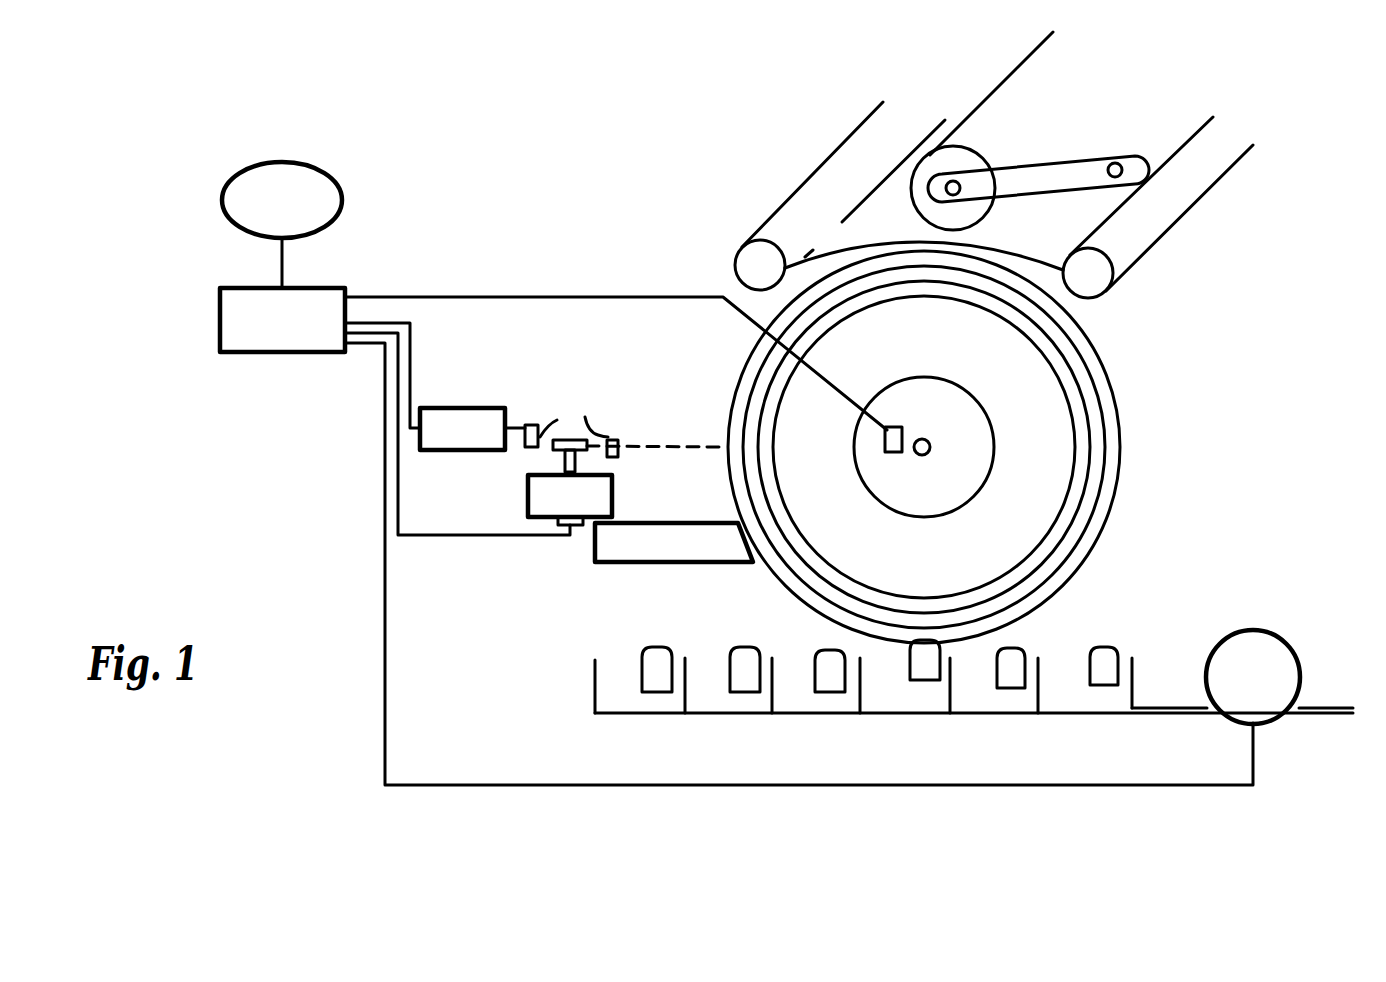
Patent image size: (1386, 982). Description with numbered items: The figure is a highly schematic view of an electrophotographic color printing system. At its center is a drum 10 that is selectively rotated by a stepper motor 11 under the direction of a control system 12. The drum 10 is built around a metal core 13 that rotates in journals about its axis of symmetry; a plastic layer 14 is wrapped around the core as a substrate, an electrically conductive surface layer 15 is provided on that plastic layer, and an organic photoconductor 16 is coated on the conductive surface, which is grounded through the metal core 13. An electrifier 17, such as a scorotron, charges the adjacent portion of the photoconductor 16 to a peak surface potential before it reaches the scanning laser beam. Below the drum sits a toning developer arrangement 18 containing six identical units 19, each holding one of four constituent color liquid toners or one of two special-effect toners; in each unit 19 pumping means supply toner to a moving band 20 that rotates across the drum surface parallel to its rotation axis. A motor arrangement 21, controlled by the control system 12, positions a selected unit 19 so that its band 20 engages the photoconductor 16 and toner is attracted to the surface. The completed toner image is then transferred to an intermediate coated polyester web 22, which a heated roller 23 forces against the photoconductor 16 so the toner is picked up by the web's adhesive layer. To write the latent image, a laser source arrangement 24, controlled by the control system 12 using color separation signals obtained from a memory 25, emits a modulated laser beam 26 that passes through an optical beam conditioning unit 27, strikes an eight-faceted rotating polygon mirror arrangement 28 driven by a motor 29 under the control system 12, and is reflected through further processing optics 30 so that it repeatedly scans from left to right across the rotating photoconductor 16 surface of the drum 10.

The drum 10 is at (1138, 291).
The stepper motor 11 is at (985, 478).
The control system 12 is at (325, 286).
The metal core 13 is at (1057, 455).
The plastic layer 14 is at (1053, 357).
The electrically conductive surface layer 15 is at (1082, 382).
The organic photoconductor 16 is at (1112, 407).
The electrifier 17 is at (685, 565).
The toning developer arrangement 18 is at (975, 713).
The toner unit 19 is at (883, 705).
The moving band 20 is at (810, 655).
The motor arrangement 21 is at (1257, 642).
The coated polyester web 22 is at (833, 253).
The heated roller 23 is at (1082, 92).
The laser electromagnetic radiation source arrangement 24 is at (440, 405).
The memory 25 is at (342, 200).
The modulated laser beam 26 is at (513, 423).
The optical beam conditioning unit 27 is at (530, 447).
The rotating polygon mirror arrangement 28 is at (553, 452).
The motor 29 is at (612, 500).
The further processing optics 30 is at (622, 455).